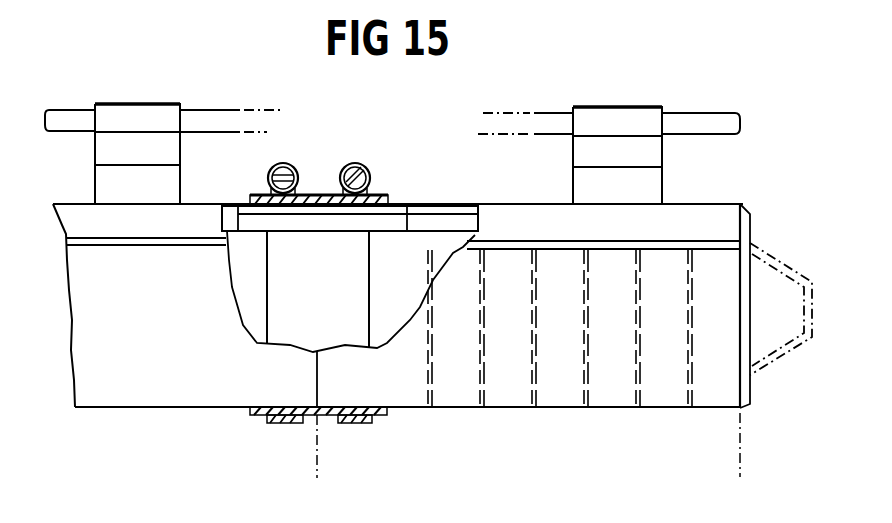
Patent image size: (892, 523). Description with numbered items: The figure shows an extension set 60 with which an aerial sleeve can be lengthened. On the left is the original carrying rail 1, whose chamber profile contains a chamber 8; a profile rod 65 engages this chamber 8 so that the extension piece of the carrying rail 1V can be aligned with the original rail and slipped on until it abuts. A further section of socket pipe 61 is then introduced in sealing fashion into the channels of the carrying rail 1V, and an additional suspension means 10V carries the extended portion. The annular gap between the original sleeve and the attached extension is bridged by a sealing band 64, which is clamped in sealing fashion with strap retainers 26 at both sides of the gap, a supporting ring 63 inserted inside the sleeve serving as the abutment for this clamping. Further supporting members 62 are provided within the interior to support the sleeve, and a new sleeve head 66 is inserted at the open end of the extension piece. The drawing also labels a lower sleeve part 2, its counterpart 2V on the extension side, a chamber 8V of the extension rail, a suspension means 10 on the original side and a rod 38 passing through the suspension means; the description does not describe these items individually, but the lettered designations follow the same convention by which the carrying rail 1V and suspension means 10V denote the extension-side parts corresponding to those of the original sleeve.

The carrying rail 1 is at (192, 217).
The extension piece of the carrying rail 1V is at (513, 220).
The housing lower part 2 is at (105, 392).
The housing lower part (variant) 2V is at (723, 393).
The chamber 8 is at (228, 224).
The mounting plate (variant) 8V is at (440, 223).
The clamping block 10 is at (134, 100).
The additional suspension means 10V is at (638, 67).
The strap retainers 26 is at (348, 163).
The guide rod 38 is at (73, 118).
The extension set 60 is at (740, 463).
The further section of socket pipe 61 is at (613, 383).
The further supporting members 62 is at (583, 392).
The supporting ring 63 is at (353, 276).
The sealing band 64 is at (248, 417).
The profile rod 65 is at (390, 223).
The new sleeve head 66 is at (765, 273).